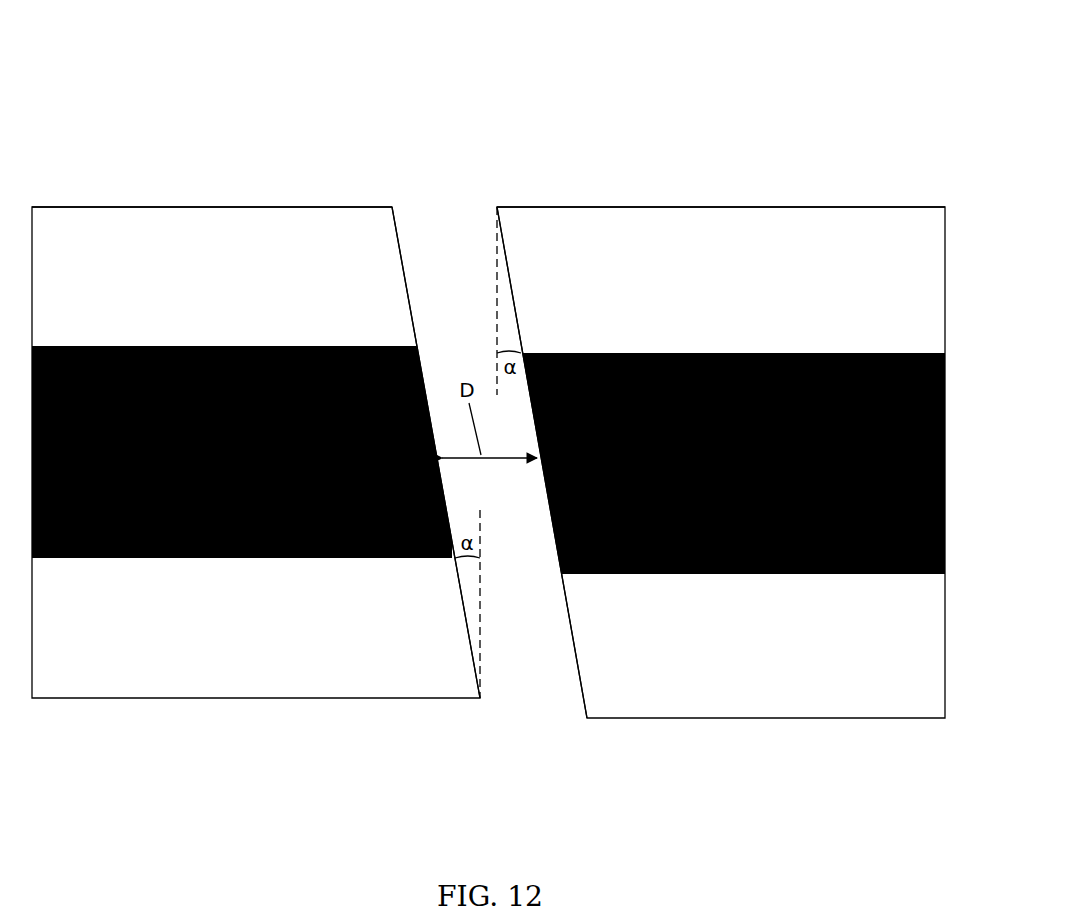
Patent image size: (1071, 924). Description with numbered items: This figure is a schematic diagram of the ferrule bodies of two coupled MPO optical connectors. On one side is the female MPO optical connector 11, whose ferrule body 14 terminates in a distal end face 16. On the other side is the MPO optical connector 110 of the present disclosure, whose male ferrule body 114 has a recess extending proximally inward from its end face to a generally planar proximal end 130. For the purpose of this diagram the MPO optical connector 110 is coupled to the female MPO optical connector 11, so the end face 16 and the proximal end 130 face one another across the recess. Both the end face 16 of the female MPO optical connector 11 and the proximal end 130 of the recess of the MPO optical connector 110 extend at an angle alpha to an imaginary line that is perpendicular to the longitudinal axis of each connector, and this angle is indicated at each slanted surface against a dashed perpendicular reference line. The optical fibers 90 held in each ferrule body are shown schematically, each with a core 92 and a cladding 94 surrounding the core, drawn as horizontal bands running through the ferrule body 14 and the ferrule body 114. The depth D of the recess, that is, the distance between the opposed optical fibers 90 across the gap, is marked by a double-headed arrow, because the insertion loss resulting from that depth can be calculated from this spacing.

The female MPO optical connector 11 is at (140, 72).
The ferrule body 14 is at (225, 194).
The end face 16 is at (396, 228).
The MPO optical connector 110 is at (726, 94).
The ferrule body 114 is at (799, 196).
The proximal end 130 is at (582, 698).
The optical fibers 90 is at (156, 340).
The core 92 is at (207, 500).
The cladding 94 is at (267, 373).